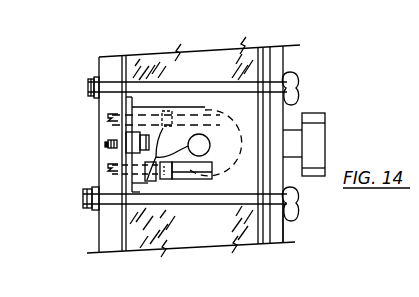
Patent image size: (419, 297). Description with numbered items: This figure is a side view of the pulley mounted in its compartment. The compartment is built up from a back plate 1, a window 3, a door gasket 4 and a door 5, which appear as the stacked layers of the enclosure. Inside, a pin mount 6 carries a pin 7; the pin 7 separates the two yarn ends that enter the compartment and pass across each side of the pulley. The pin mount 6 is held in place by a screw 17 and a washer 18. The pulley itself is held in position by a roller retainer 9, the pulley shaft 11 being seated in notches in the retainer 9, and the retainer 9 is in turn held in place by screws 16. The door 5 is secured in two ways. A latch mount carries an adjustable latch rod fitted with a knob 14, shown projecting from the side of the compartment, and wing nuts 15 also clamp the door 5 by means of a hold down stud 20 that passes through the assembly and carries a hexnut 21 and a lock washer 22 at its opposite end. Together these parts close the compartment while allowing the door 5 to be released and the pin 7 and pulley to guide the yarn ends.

The back plate 1 is at (99, 108).
The window 3 is at (267, 62).
The door gasket 4 is at (266, 62).
The door 5 is at (283, 228).
The pin mount 6 is at (132, 150).
The pin 7 is at (140, 58).
The roller retainer 9 is at (163, 107).
The pulley shaft 11 is at (199, 145).
The knob 14 is at (323, 144).
The wing nuts 15 is at (300, 77).
The screws 16 is at (158, 170).
The screw 17 is at (80, 132).
The washer 18 is at (106, 145).
The hold down stud 20 is at (192, 90).
The hexnut 21 is at (159, 128).
The lock washer 22 is at (88, 80).